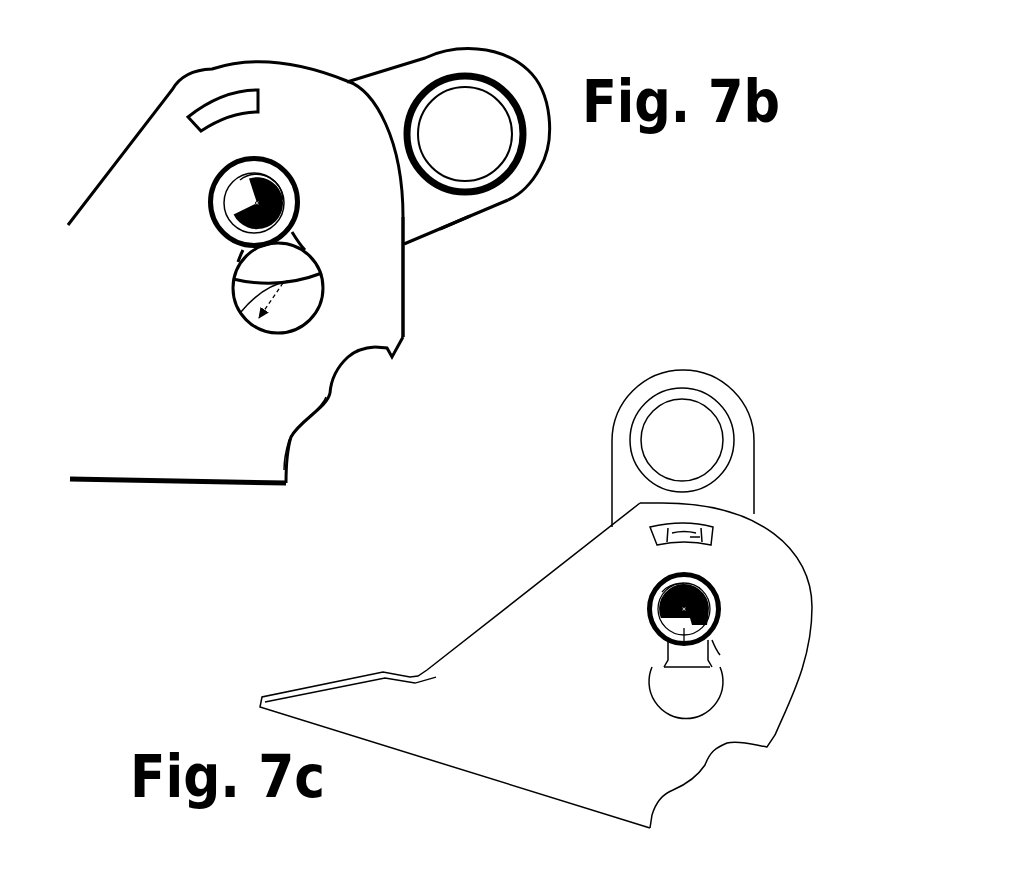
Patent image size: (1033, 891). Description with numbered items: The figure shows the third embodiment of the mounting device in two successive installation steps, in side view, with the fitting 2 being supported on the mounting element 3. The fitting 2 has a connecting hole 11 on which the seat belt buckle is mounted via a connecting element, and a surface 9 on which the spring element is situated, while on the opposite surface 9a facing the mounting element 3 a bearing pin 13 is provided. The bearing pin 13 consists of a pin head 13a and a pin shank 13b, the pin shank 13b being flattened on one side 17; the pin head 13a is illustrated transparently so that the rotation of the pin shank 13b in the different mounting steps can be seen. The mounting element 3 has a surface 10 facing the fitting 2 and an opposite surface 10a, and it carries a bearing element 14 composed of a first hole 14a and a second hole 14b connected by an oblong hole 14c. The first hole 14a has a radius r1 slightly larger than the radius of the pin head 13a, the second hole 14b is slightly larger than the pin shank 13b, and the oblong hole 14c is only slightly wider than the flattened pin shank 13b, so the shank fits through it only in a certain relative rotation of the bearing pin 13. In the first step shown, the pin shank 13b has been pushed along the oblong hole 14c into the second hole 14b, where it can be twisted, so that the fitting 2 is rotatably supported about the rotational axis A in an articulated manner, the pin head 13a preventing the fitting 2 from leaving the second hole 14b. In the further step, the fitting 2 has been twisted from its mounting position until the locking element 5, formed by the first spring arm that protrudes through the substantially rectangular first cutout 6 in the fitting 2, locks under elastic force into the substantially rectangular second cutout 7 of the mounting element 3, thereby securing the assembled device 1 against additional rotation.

In FIG. 7B, the holder 1 is at (130, 110).
In FIG. 7C, the holder 1 is at (543, 556).
In FIG. 7B, the fitting 2 is at (420, 70).
In FIG. 7C, the fitting 2 is at (620, 421).
In FIG. 7B, the mounting element 3 is at (265, 433).
In FIG. 7C, the mounting element 3 is at (450, 670).
In FIG. 7C, the locking element 5 is at (692, 527).
In FIG. 7C, the first cutout 6 is at (707, 522).
In FIG. 7B, the second cutout 7 is at (238, 102).
In FIG. 7C, the second cutout 7 is at (712, 535).
In FIG. 7B, the surface of the fitting 9 is at (496, 199).
In FIG. 7B, the surface of the fitting facing the mounting element 9a is at (455, 235).
In FIG. 7B, the surface of the mounting element 10 is at (383, 300).
In FIG. 7B, the surface of the mounting element opposite from the fitting 10a is at (399, 352).
In FIG. 7B, the connecting hole 11 is at (483, 140).
In FIG. 7C, the connecting hole 11 is at (703, 423).
In FIG. 7B, the bearing pin 13 is at (200, 218).
In FIG. 7C, the bearing pin 13 is at (640, 623).
In FIG. 7B, the pin head 13a is at (268, 167).
In FIG. 7C, the pin head 13a is at (670, 580).
In FIG. 7B, the pin shank 13b is at (256, 182).
In FIG. 7C, the pin shank 13b is at (666, 601).
In FIG. 7C, the bearing element 14 is at (724, 643).
In FIG. 7B, the first hole 14a is at (287, 312).
In FIG. 7C, the first hole 14a is at (703, 695).
In FIG. 7B, the second hole 14b is at (226, 193).
In FIG. 7C, the second hole 14b is at (657, 630).
In FIG. 7B, the oblong hole 14c is at (297, 232).
In FIG. 7C, the oblong hole 14c is at (717, 622).
In FIG. 7B, the flattened side 17 is at (247, 205).
In FIG. 7C, the flattened side 17 is at (688, 622).
In FIG. 7B, the rotational axis A is at (252, 199).
In FIG. 7C, the rotational axis A is at (688, 605).
In FIG. 7B, the radius of the first hole r1 is at (237, 313).